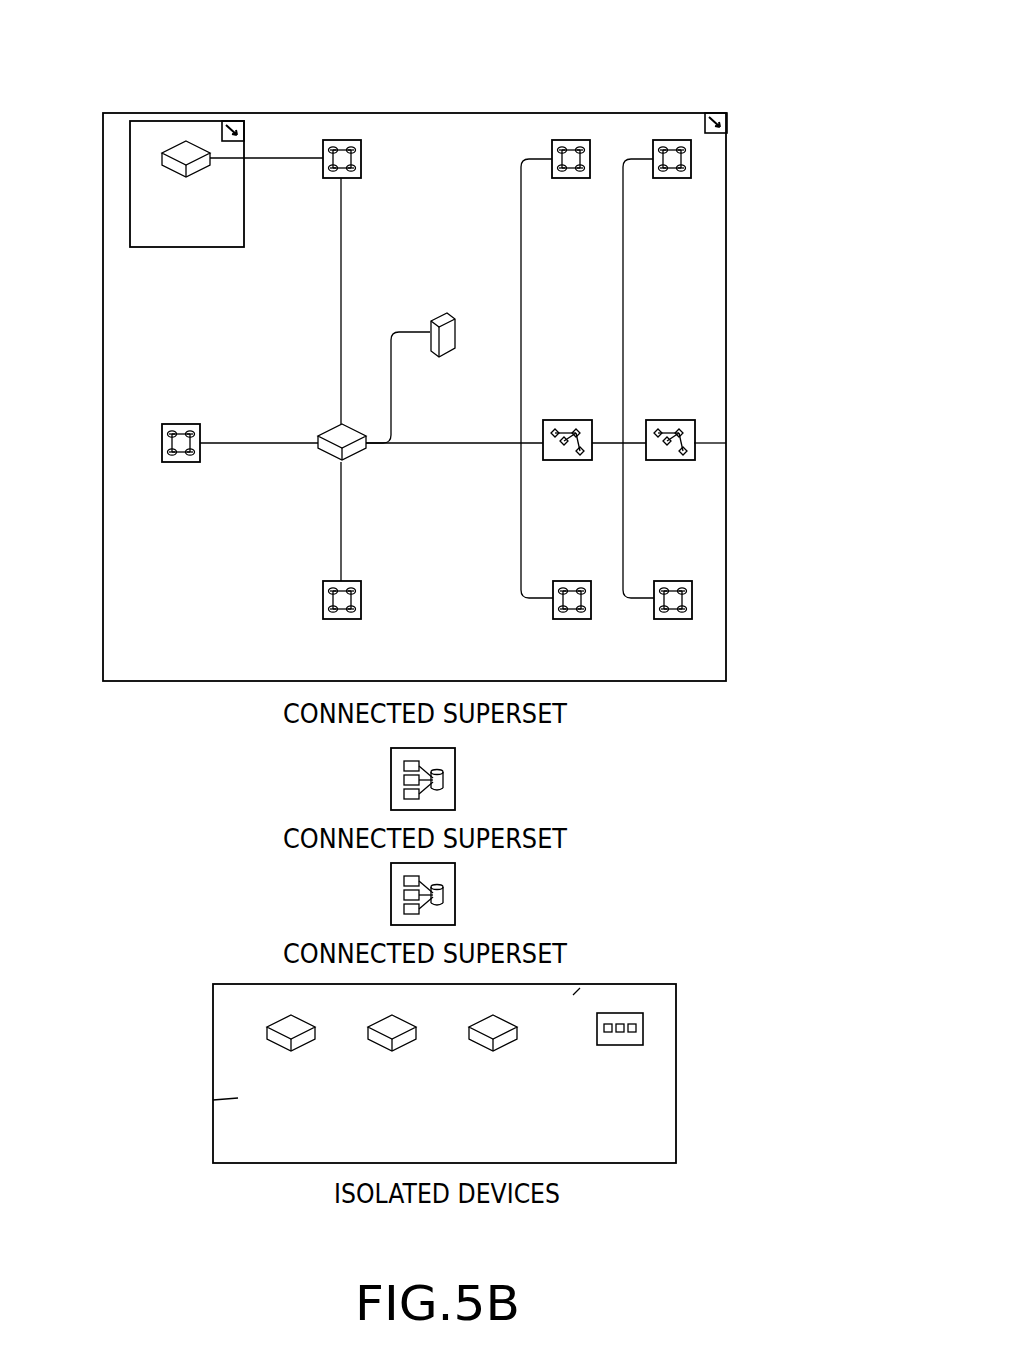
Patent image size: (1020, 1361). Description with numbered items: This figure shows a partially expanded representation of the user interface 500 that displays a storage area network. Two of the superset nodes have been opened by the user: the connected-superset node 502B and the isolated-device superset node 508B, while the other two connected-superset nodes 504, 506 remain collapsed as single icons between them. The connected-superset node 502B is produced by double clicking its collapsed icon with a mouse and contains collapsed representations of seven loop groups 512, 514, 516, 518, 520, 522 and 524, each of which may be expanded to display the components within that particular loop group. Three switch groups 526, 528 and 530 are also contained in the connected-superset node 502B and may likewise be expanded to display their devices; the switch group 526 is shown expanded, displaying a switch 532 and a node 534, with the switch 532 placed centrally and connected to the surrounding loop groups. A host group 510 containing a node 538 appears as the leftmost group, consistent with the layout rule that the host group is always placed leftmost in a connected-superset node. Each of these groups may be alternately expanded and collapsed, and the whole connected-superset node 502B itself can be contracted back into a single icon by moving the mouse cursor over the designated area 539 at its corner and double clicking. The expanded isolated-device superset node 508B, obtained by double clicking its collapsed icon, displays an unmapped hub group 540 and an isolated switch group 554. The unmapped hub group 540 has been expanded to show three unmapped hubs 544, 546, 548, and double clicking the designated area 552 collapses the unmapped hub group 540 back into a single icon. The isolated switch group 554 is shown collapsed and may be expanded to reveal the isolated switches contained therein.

The user interface 500 is at (668, 66).
The connected-superset node 502B is at (726, 371).
The connected-superset node 504 is at (455, 770).
The connected-superset node 506 is at (455, 884).
The isolated-device superset node 508B is at (677, 1052).
The host group 510 is at (130, 222).
The loop group 512 is at (347, 140).
The loop group 514 is at (570, 140).
The loop group 516 is at (691, 152).
The loop group 518 is at (162, 443).
The loop group 520 is at (361, 598).
The loop group 522 is at (572, 581).
The loop group 524 is at (692, 598).
The switch group 526 is at (170, 350).
The switch group 528 is at (577, 420).
The switch group 530 is at (694, 443).
The switch 532 is at (318, 447).
The node 534 is at (442, 316).
The node 538 is at (165, 154).
The designated area 539 is at (713, 113).
The unmapped hub group 540 is at (213, 1100).
The unmapped hub 544 is at (285, 1016).
The unmapped hub 546 is at (386, 1016).
The unmapped hub 548 is at (488, 1016).
The designated area 552 is at (573, 995).
The isolated switch group 554 is at (633, 1012).